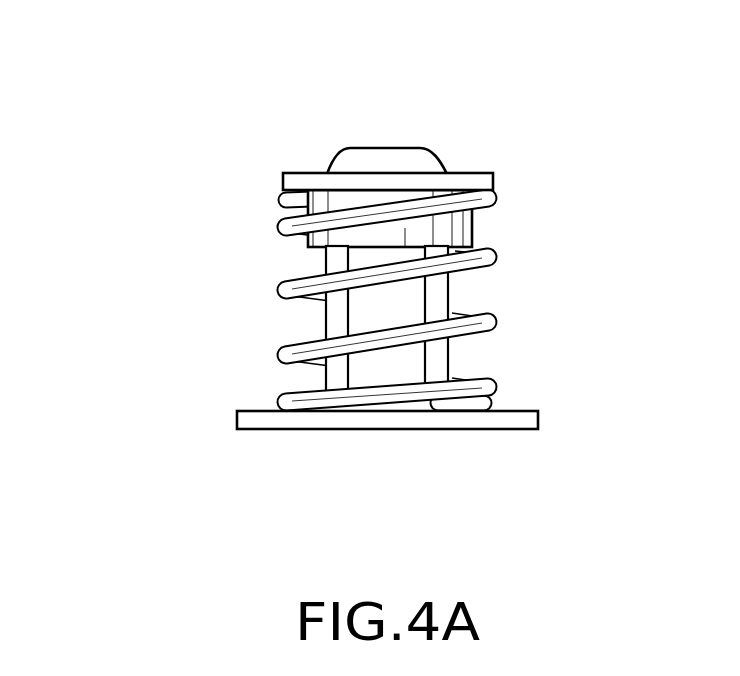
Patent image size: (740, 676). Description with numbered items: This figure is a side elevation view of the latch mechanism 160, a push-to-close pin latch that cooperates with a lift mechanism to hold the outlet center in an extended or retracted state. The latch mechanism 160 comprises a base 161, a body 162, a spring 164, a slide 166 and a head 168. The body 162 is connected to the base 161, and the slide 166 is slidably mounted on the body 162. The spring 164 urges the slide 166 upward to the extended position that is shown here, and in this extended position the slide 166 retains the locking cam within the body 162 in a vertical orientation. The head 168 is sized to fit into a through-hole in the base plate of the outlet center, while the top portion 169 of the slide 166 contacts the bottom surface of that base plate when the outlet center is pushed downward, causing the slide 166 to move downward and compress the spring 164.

The latch mechanism 160 is at (168, 120).
The base 161 is at (462, 430).
The body 162 is at (413, 295).
The spring 164 is at (283, 294).
The slide 166 is at (473, 227).
The head 168 is at (445, 173).
The top portion 169 is at (297, 173).